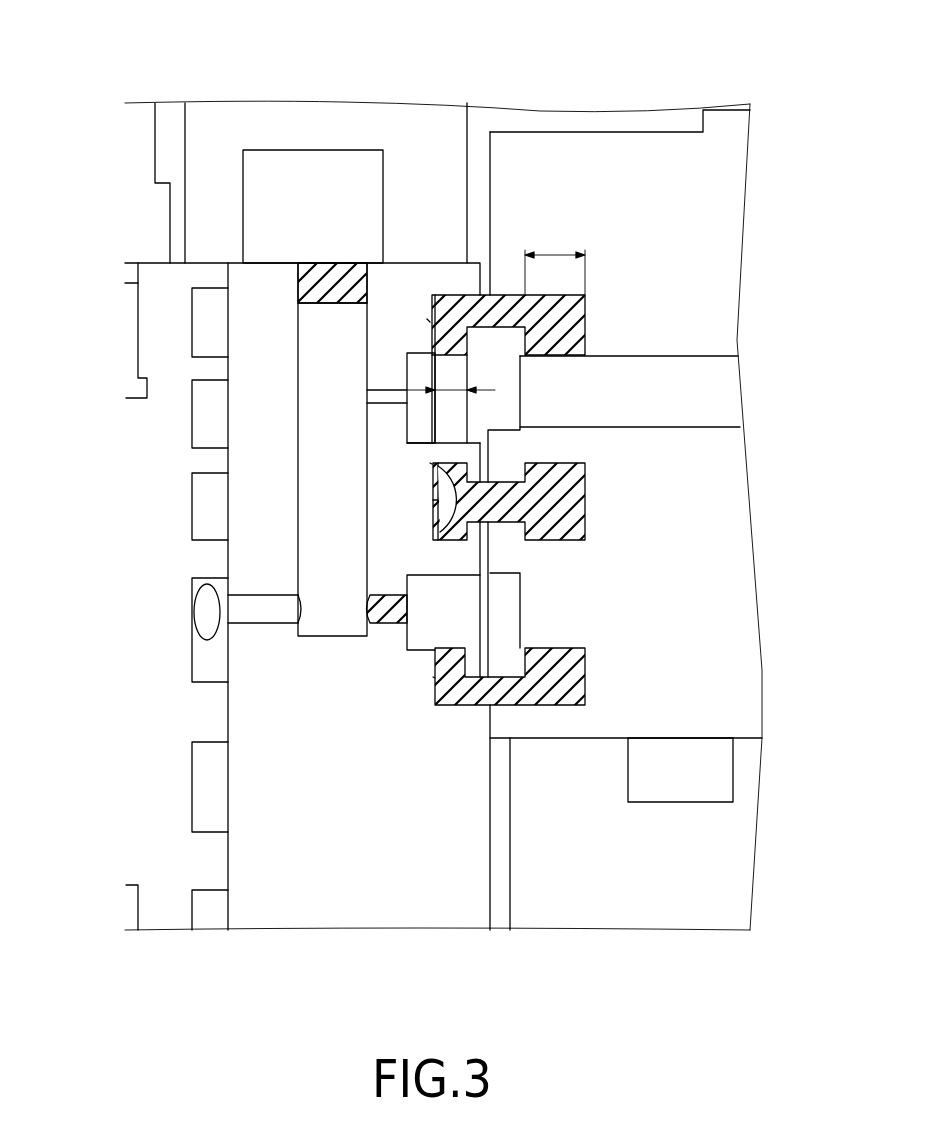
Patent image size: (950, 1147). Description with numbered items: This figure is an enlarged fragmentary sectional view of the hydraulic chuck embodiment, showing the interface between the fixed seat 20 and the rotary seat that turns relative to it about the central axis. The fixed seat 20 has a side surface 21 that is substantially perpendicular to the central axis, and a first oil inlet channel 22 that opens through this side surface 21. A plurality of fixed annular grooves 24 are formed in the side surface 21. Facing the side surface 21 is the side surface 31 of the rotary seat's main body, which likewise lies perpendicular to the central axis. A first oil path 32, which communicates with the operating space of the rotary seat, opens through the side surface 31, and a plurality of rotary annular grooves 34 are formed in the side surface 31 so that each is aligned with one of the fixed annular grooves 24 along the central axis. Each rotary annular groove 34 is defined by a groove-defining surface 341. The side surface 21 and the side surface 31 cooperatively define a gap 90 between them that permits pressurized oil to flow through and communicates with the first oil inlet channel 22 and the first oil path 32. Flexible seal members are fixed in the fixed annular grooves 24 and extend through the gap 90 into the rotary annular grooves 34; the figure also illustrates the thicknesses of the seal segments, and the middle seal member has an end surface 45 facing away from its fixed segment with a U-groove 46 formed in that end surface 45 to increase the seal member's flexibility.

The fixed seat 20 is at (720, 256).
The side surface 21 is at (488, 297).
The first oil inlet channel 22 is at (693, 390).
The fixed annular grooves 24 is at (587, 320).
The side surface 31 is at (478, 296).
The first oil path 32 is at (365, 398).
The rotary annular grooves 34 is at (430, 322).
The groove-defining surface 341 is at (431, 498).
The end surface 45 is at (434, 469).
The U-groove 46 is at (440, 515).
The gap 90 is at (481, 340).